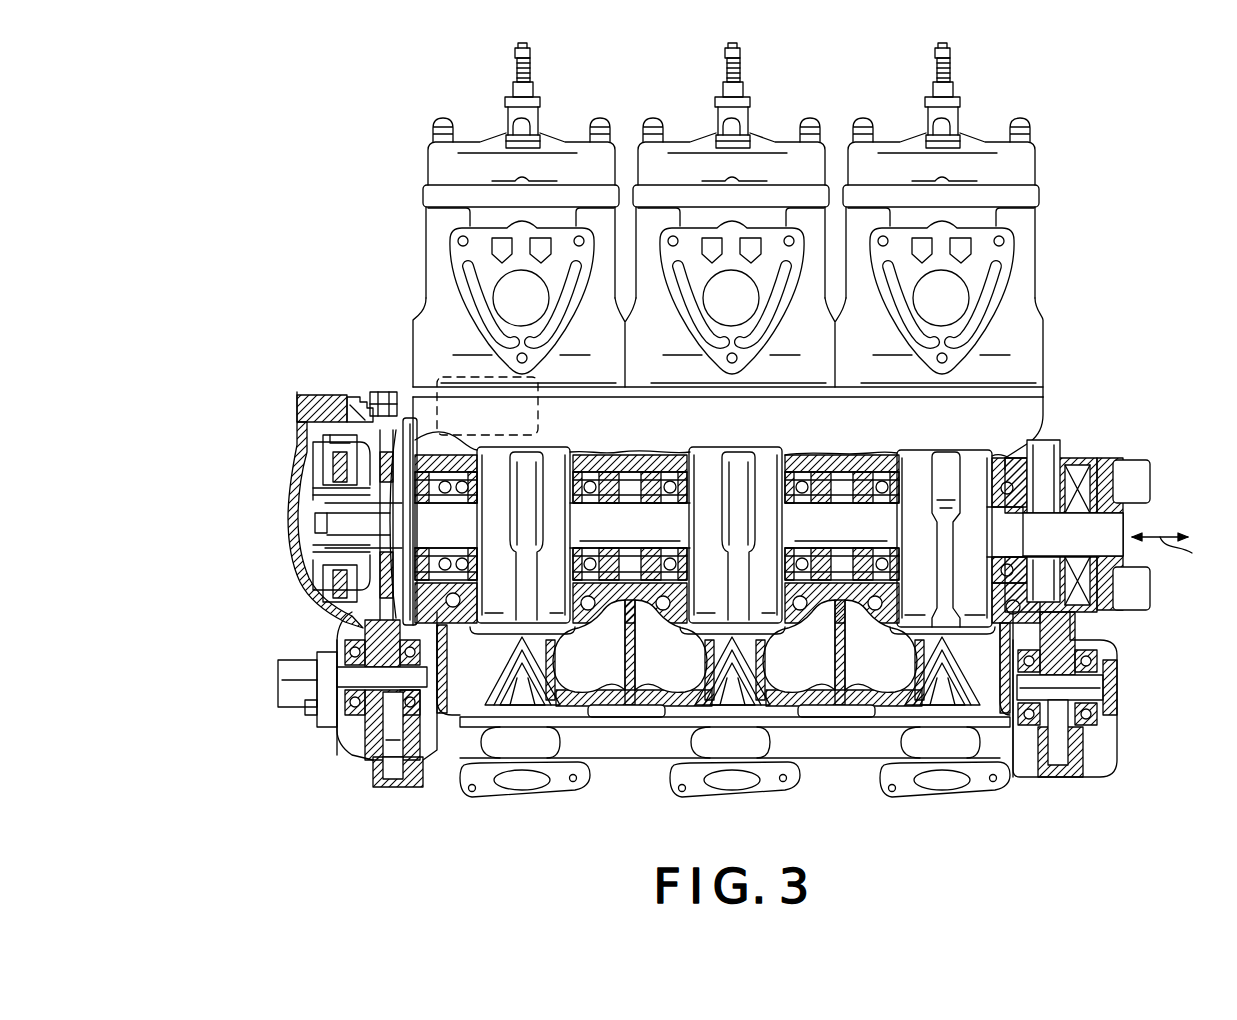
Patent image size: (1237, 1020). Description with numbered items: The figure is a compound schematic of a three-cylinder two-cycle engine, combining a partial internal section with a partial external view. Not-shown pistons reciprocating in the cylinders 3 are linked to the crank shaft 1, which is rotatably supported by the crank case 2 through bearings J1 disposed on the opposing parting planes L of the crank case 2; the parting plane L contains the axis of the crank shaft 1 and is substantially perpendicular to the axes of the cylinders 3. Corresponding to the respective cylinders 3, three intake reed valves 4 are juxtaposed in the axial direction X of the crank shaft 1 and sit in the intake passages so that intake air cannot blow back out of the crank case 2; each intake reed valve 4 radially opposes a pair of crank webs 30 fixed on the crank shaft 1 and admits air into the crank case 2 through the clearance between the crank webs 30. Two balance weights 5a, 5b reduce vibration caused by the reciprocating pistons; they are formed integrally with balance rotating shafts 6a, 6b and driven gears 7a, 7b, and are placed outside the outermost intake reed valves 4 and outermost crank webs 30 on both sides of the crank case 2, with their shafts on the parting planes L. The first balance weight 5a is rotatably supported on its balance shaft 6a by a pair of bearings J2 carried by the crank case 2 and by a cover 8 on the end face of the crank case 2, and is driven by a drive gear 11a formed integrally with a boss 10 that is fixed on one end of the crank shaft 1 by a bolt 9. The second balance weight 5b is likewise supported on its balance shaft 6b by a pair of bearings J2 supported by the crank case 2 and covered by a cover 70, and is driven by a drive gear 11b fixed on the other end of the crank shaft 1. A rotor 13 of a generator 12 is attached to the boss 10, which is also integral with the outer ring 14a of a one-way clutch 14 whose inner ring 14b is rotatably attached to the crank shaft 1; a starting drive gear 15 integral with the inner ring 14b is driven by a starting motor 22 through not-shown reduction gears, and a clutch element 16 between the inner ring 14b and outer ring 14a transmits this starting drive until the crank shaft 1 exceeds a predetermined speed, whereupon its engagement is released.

The crank shaft 1 is at (1110, 528).
The crank case 2 is at (1088, 451).
The cylinders 3 is at (1035, 260).
The intake reed valves 4 is at (540, 652).
The first balance weight 5a is at (383, 625).
The second balance weight 5b is at (1062, 640).
The first balance shaft 6a is at (337, 667).
The second balance shaft 6b is at (1090, 683).
The driven gear 7a is at (357, 733).
The driven gear 7b is at (1060, 730).
The cover 8 is at (320, 400).
The bolt 9 is at (320, 524).
The boss 10 is at (322, 490).
The drive gear 11a is at (363, 410).
The drive gear 11b is at (1085, 468).
The generator 12 is at (311, 455).
The rotor 13 is at (303, 400).
The one-way clutch 14 is at (400, 535).
The outer ring 14a is at (413, 410).
The inner ring 14b is at (392, 513).
The starting drive gear 15 is at (325, 598).
The clutch element 16 is at (370, 583).
The starting motor 22 is at (463, 380).
The crank webs 30 is at (482, 633).
The cover 70 is at (1113, 693).
The bearings J1 is at (1010, 472).
The bearings J2 is at (337, 690).
The parting plane L is at (652, 727).
The axial direction X is at (1175, 555).